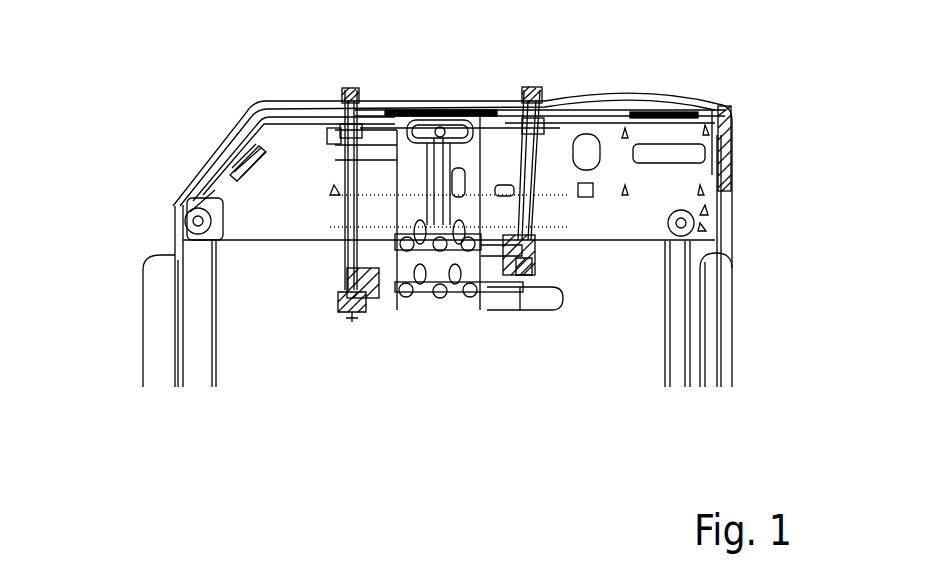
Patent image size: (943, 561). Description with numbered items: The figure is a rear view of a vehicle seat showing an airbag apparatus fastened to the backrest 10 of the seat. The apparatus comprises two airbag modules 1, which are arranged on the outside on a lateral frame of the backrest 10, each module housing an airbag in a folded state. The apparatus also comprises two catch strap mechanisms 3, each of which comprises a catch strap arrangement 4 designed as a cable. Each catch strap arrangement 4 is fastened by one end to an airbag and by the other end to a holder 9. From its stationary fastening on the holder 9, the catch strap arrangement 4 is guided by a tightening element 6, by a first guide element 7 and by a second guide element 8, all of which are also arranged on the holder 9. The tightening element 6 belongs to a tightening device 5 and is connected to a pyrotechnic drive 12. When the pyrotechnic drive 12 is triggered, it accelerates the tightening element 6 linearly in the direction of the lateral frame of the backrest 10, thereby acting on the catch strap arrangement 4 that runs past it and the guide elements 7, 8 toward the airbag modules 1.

The airbag module 1 is at (160, 307).
The catch strap mechanism 3 is at (273, 62).
The catch strap arrangement 4 is at (210, 153).
The tightening device 5 is at (405, 363).
The tightening element 6 is at (340, 287).
The first guide element 7 is at (355, 292).
The second guide element 8 is at (355, 100).
The holder 9 is at (457, 308).
The backrest 10 is at (693, 140).
The pyrotechnic drive 12 is at (537, 312).